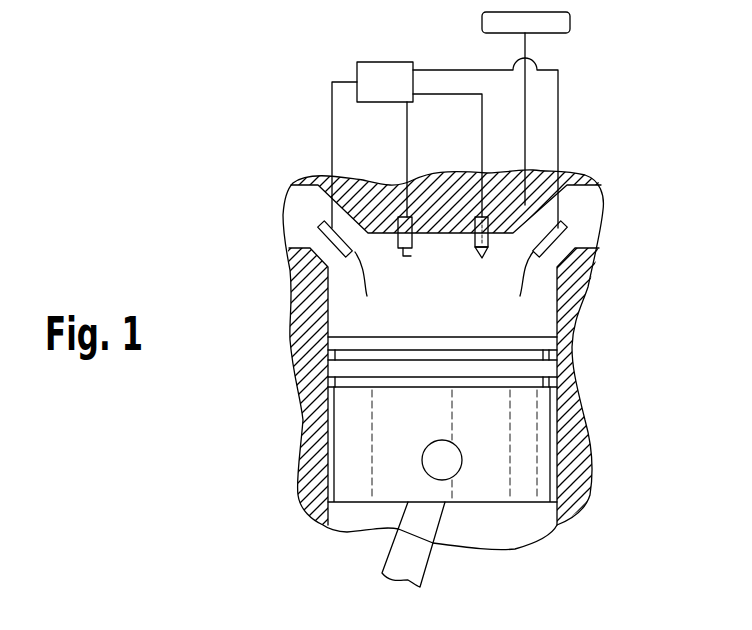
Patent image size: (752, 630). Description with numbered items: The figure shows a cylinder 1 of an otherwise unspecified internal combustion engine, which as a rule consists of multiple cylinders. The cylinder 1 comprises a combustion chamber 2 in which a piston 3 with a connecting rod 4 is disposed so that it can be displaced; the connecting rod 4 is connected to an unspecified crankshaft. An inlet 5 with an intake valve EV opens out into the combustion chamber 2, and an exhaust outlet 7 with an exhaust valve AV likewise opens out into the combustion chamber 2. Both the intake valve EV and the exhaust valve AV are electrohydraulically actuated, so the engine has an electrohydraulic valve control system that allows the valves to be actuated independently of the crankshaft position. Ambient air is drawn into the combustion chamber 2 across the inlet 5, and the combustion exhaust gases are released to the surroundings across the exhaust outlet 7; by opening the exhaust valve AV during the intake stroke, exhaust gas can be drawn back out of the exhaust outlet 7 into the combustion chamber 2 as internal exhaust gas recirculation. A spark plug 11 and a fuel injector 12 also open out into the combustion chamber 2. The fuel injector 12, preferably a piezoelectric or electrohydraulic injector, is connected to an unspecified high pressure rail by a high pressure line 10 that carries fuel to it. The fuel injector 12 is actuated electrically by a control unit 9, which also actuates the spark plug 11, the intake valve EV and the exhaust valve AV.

The cylinder 1 is at (606, 368).
The combustion chamber 2 is at (338, 305).
The piston 3 is at (488, 478).
The connecting rod 4 is at (413, 550).
The inlet 5 is at (290, 264).
The exhaust outlet 7 is at (589, 264).
The control unit 9 is at (384, 82).
The high pressure line 10 is at (527, 47).
The spark plug 11 is at (411, 246).
The fuel injector 12 is at (477, 262).